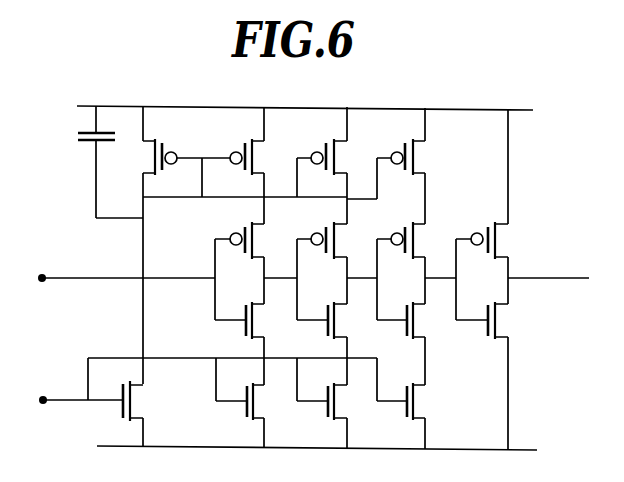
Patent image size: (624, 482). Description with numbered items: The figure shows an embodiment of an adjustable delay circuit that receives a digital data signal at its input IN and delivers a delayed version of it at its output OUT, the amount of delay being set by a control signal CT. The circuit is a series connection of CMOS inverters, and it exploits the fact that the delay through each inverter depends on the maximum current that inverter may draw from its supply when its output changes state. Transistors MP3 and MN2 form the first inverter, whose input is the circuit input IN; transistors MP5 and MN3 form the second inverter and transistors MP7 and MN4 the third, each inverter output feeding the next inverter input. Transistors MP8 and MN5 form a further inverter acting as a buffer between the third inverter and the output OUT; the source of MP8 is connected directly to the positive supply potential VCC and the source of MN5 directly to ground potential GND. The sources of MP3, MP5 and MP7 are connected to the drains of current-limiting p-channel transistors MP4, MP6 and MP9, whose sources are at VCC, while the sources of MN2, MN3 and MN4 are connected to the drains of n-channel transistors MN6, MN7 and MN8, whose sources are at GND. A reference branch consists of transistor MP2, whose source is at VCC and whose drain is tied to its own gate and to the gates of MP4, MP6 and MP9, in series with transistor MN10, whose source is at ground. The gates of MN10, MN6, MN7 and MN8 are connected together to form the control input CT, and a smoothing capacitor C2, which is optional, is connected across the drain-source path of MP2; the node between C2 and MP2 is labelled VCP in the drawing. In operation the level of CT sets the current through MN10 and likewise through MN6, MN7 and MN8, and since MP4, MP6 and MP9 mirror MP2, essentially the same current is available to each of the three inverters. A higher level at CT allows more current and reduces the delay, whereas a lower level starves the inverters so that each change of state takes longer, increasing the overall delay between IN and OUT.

The p-channel MOS transistor MP2 is at (186, 143).
The p-channel MOS transistor MP3 is at (239, 226).
The p-channel MOS transistor MP4 is at (243, 143).
The p-channel MOS transistor MP5 is at (322, 227).
The p-channel MOS transistor MP6 is at (322, 143).
The p-channel MOS transistor MP7 is at (401, 227).
The p-channel MOS transistor MP8 is at (482, 227).
The p-channel MOS transistor MP9 is at (401, 143).
The n-channel MOS transistor MN2 is at (239, 332).
The n-channel MOS transistor MN3 is at (322, 333).
The n-channel MOS transistor MN4 is at (401, 333).
The n-channel MOS transistor MN5 is at (482, 334).
The n-channel MOS transistor MN6 is at (239, 414).
The n-channel MOS transistor MN7 is at (322, 415).
The n-channel MOS transistor MN8 is at (401, 415).
The n-channel MOS transistor MN10 is at (112, 413).
The smoothing capacitor C2 is at (82, 162).
The charge pump voltage node VCP is at (119, 206).
The positive power supply potential VCC is at (305, 96).
The ground potential GND is at (317, 462).
The input IN is at (124, 261).
The control signal CT is at (78, 382).
The output OUT is at (548, 271).